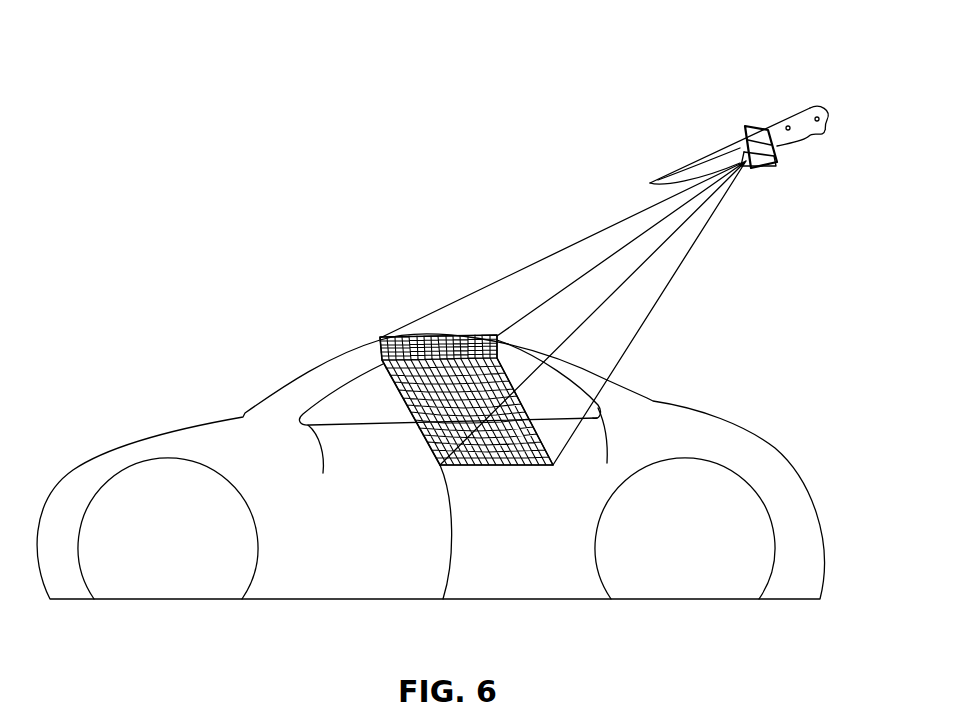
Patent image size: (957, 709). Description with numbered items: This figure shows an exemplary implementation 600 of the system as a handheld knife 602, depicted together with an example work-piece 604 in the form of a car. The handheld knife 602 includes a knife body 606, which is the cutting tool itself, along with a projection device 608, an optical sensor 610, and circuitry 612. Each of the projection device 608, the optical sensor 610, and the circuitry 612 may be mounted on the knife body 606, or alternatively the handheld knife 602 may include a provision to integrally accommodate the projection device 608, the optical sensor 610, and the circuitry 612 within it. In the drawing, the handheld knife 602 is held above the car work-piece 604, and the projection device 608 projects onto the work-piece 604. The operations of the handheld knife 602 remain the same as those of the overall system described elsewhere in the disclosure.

The exemplary implementation 600 is at (107, 87).
The handheld knife 602 is at (788, 85).
The work-piece 604 is at (740, 421).
The knife body 606 is at (708, 157).
The projection device 608 is at (803, 140).
The optical sensor 610 is at (750, 163).
The circuitry 612 is at (757, 127).